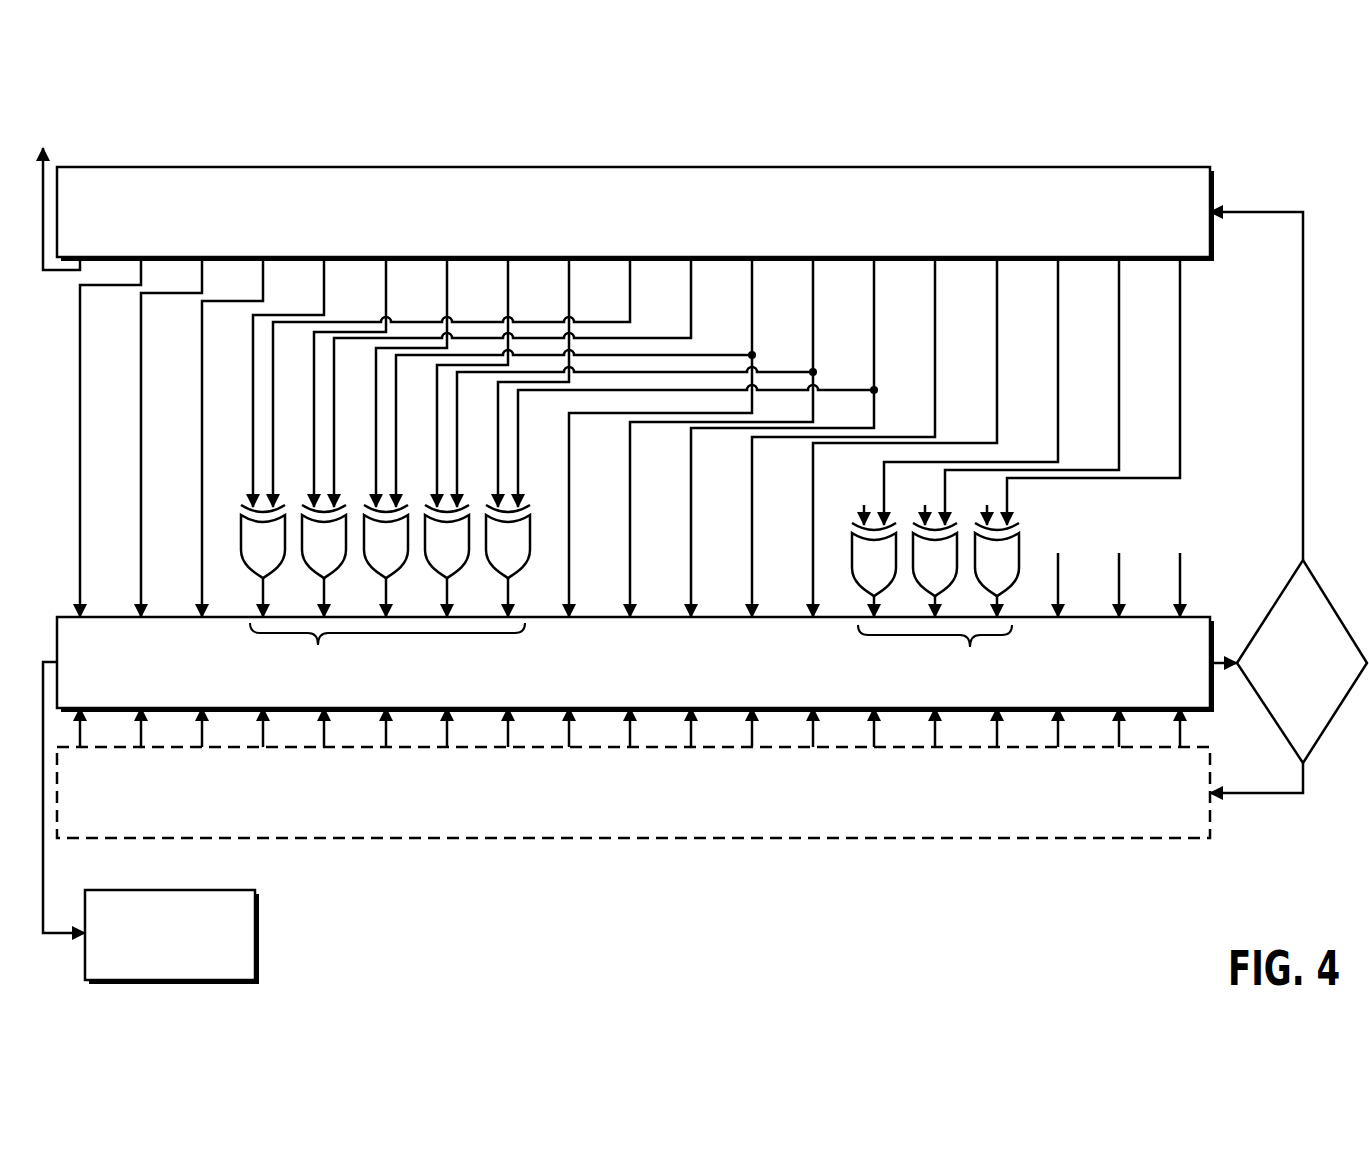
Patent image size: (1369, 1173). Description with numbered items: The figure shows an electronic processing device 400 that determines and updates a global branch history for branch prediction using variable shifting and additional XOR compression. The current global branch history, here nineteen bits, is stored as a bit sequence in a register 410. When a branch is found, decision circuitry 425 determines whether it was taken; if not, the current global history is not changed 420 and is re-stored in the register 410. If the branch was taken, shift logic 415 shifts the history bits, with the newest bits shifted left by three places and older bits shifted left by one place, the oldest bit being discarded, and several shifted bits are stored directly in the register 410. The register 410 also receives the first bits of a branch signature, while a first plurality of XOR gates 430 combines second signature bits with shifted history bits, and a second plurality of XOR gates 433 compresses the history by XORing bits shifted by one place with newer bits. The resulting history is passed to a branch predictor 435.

The electronic processing device 400 is at (607, 118).
The shift logic 415 is at (1097, 217).
The register 410 is at (1096, 678).
The current global history not changed 420 is at (1096, 811).
The decision circuitry 425 is at (1328, 725).
The first plurality of XOR gates 430 is at (1020, 581).
The second plurality of XOR gates 433 is at (385, 594).
The branch predictor 435 is at (146, 948).